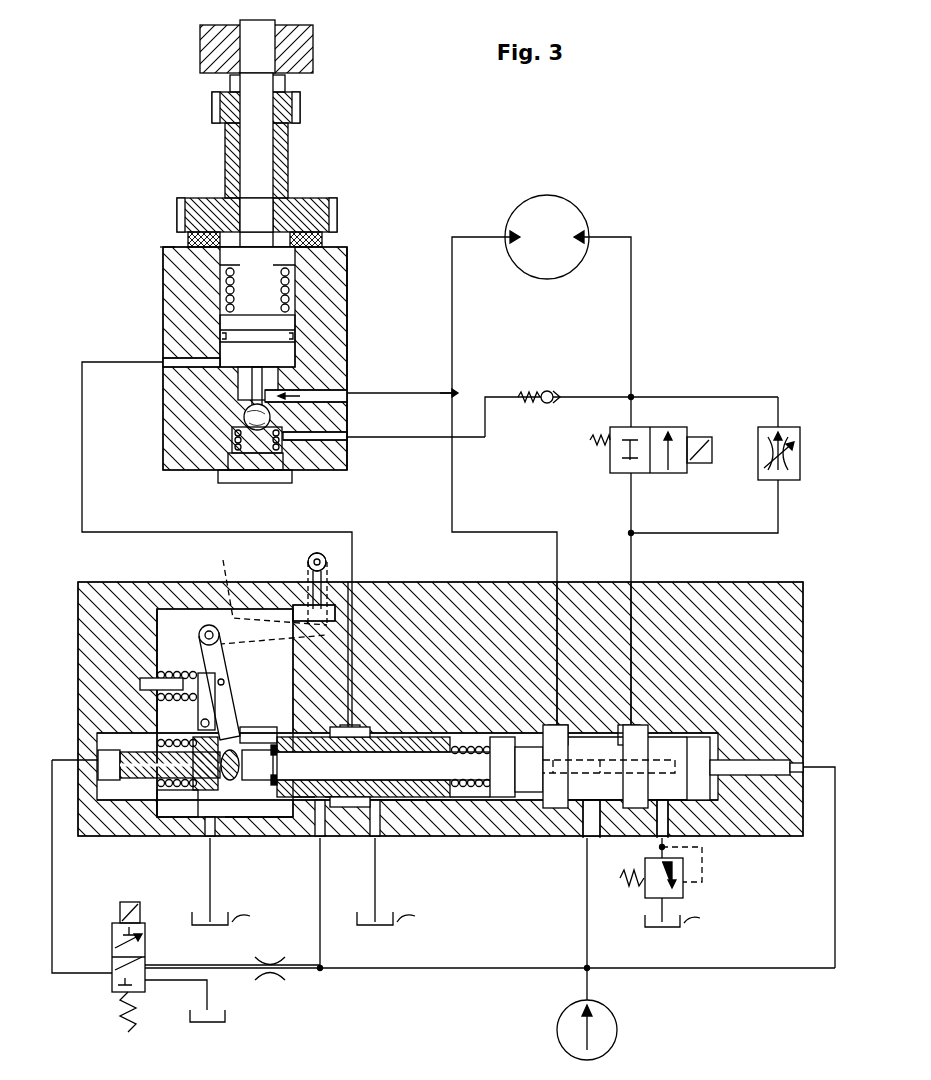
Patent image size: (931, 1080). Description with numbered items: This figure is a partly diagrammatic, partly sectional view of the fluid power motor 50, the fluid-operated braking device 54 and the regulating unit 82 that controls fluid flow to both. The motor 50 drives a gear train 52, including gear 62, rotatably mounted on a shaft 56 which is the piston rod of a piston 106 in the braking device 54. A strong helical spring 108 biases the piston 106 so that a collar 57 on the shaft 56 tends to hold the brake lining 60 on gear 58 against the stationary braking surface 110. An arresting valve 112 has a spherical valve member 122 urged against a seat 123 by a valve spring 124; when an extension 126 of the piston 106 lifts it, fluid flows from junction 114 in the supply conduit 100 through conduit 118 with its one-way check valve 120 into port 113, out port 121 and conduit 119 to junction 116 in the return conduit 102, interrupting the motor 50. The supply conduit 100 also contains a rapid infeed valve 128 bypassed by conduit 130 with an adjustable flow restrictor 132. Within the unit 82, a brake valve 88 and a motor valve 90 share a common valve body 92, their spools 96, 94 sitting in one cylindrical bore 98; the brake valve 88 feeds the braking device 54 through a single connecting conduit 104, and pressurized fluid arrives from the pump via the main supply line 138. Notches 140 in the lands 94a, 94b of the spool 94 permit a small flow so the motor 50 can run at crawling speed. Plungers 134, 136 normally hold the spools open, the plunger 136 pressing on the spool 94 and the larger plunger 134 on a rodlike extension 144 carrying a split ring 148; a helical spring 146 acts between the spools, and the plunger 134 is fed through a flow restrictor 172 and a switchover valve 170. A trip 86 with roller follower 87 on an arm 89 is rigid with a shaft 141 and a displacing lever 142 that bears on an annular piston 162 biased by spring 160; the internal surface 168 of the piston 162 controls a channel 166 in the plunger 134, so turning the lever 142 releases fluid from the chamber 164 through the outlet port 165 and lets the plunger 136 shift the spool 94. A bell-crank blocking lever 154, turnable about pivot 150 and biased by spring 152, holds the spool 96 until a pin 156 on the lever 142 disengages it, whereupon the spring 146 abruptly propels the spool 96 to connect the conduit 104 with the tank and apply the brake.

The fluid power motor 50 is at (545, 197).
The gear train 52 is at (225, 160).
The fluid-operated braking device 54 is at (185, 300).
The shaft 56 is at (262, 157).
The collar 57 is at (300, 73).
The gear 58 is at (315, 210).
The brake lining 60 is at (322, 240).
The gear 62 is at (296, 108).
The second stationary regulating unit 82 is at (403, 582).
The motion receiving input element or trip 86 is at (306, 572).
The roller follower 87 is at (322, 553).
The brake valve 88 is at (390, 735).
The arm 89 is at (223, 572).
The motor valve 90 is at (670, 745).
The valve housing or body 92 is at (520, 598).
The spool 94 is at (708, 838).
The land 94a is at (620, 846).
The land 94b is at (525, 846).
The spool 96 is at (418, 802).
The elongated cylindrical bore 98 is at (480, 802).
The supply conduit 100 is at (631, 330).
The return conduit 102 is at (452, 343).
The connecting conduit 104 is at (82, 440).
The piston 106 is at (230, 323).
The helical spring 108 is at (226, 283).
The stationary braking surface 110 is at (168, 246).
The arresting valve 112 is at (340, 440).
The port 113 is at (325, 470).
The junction 114 is at (633, 394).
The junction 116 is at (440, 393).
The conduit 118 is at (585, 395).
The conduit 119 is at (355, 400).
The one-way ball check valve 120 is at (545, 403).
The second port 121 is at (350, 340).
The spherical valve member 122 is at (232, 430).
The seat 123 is at (247, 410).
The valve spring 124 is at (255, 453).
The extension 126 is at (252, 395).
The rapid infeed valve 128 is at (645, 475).
The bypass conduit 130 is at (720, 397).
The adjustable flow restrictor 132 is at (760, 475).
The plunger 134 is at (105, 836).
The plunger 136 is at (770, 800).
The main supply line 138 is at (470, 965).
The notches 140 is at (630, 808).
The shaft 141 is at (205, 625).
The displacing lever 142 is at (225, 648).
The rodlike extension 144 is at (262, 836).
The helical spring 146 is at (470, 745).
The split ring 148 is at (295, 836).
The pivot 150 is at (200, 723).
The helical spring 152 is at (178, 670).
The blocking lever 154 is at (258, 727).
The motion transmitting pin 156 is at (224, 684).
The spring 160 is at (165, 836).
The annular piston 162 is at (205, 836).
The chamber 164 is at (105, 740).
The outlet port 165 is at (206, 836).
The bore or channel 166 is at (130, 836).
The cylindrical internal surface 168 is at (232, 836).
The switchover valve 170 is at (105, 985).
The flow restrictor 172 is at (272, 978).